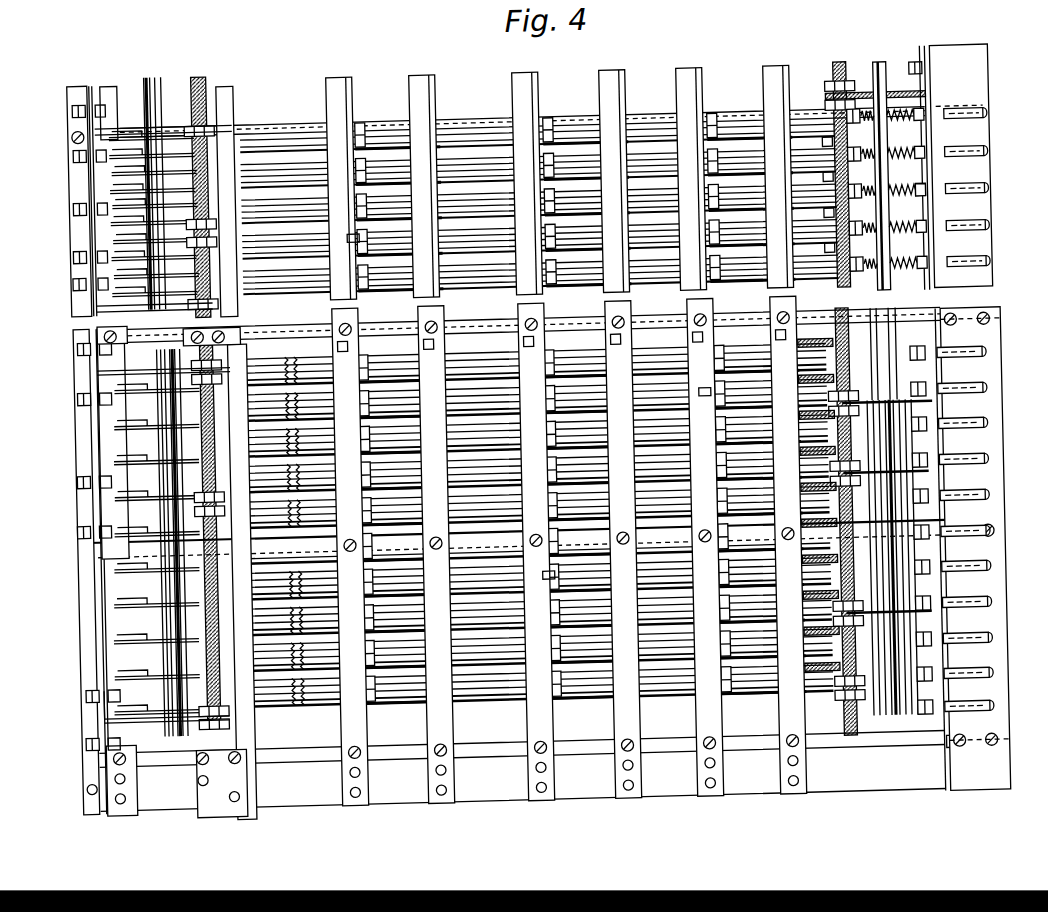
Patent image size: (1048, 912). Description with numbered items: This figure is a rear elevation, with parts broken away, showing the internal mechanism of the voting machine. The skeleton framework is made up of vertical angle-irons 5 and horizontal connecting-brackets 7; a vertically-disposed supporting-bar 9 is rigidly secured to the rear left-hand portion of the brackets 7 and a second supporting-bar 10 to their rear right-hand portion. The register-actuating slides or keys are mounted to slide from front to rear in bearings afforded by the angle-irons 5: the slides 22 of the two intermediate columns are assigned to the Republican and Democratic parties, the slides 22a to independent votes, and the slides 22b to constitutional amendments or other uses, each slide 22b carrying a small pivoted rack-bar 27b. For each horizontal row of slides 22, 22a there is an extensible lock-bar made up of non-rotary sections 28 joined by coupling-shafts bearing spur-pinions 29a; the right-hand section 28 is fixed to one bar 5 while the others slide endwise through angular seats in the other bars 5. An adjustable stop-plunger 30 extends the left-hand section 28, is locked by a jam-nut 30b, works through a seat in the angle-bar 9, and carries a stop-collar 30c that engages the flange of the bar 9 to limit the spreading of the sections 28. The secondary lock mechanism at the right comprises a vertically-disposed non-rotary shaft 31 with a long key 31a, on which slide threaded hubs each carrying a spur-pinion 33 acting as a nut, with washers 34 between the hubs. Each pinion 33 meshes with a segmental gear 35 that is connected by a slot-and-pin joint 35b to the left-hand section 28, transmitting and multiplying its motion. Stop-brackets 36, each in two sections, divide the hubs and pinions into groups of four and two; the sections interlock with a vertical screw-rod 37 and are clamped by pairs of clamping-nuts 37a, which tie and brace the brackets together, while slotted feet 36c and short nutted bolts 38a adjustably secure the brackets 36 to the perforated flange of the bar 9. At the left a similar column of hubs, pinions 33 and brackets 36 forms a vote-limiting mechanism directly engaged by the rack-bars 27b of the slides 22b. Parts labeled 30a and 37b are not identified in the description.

The vertical angle-irons 5 is at (233, 102).
The horizontal connecting-brackets 7 is at (469, 124).
The supporting-bar 9 is at (996, 299).
The supporting-bar 10 is at (111, 83).
The register-actuating slides or keys 22 is at (395, 415).
The register-actuating slides or keys 22a is at (752, 410).
The register-actuating slides or keys 22b is at (183, 325).
The rack-bar 27b is at (123, 138).
The non-rotary sections 28 is at (284, 250).
The spur-pinions 29a is at (352, 233).
The stop-plunger 30 is at (980, 212).
The bolt 30a is at (907, 388).
The jam-nuts 30b is at (834, 156).
The stop-collars 30c is at (928, 206).
The non-rotary shaft 31 is at (165, 636).
The key 31a is at (163, 600).
The spur-pinion 33 is at (187, 410).
The washers 34 is at (171, 168).
The segmental gear 35 is at (820, 567).
The slot-and-pin joint 35b is at (831, 254).
The stop-brackets 36 is at (141, 711).
The slotted feet 36c is at (101, 355).
The screw-rod 37 is at (230, 65).
The clamping-nuts 37a is at (224, 704).
The adjusting nut 37b is at (218, 218).
The nutted bolts 38a is at (80, 270).